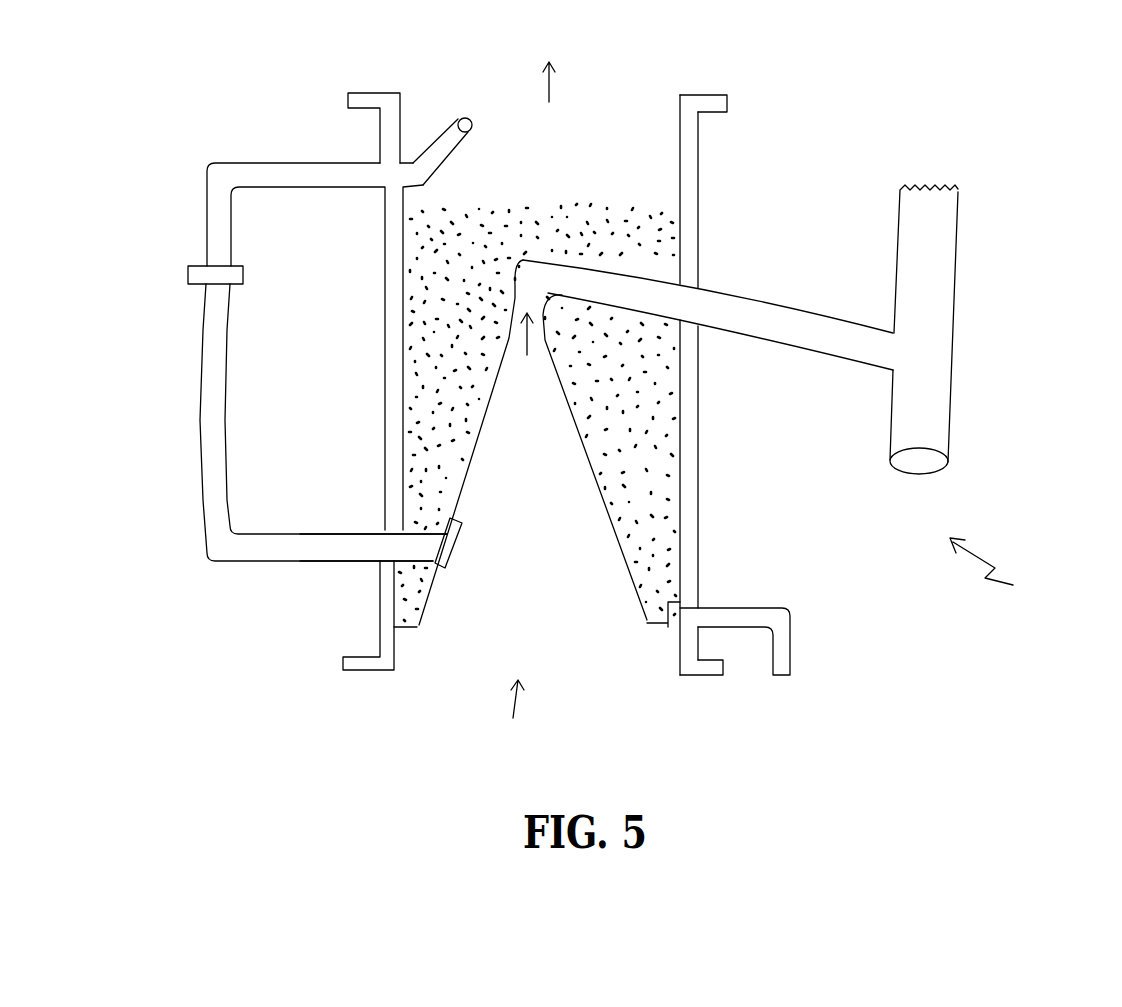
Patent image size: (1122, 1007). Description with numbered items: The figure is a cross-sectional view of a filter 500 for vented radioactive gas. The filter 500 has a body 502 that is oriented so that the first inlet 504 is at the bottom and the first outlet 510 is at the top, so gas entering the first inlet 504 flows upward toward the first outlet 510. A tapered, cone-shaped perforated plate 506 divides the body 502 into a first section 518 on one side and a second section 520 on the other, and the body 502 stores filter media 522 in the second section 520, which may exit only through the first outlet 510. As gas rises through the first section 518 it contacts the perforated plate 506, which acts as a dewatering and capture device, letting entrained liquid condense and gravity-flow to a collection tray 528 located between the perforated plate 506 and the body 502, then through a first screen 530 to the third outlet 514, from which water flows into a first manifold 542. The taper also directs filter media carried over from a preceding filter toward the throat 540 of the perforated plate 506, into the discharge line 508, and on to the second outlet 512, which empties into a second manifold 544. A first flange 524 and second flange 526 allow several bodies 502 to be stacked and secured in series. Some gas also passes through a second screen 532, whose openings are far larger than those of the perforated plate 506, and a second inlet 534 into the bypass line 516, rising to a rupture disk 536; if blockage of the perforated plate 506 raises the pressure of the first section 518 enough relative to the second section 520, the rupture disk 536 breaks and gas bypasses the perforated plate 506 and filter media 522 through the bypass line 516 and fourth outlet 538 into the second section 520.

The filter 500 is at (1018, 567).
The body 502 is at (700, 155).
The first inlet 504 is at (520, 721).
The perforated plate 506 is at (610, 560).
The discharge line 508 is at (655, 300).
The first outlet 510 is at (552, 65).
The second outlet 512 is at (693, 307).
The third outlet 514 is at (690, 618).
The bypass line 516 is at (218, 398).
The first section 518 is at (553, 485).
The second section 520 is at (650, 165).
The filter media 522 is at (653, 498).
The first flange 524 is at (357, 673).
The second flange 526 is at (370, 92).
The collection tray 528 is at (417, 627).
The first screen 530 is at (670, 627).
The second screen 532 is at (452, 550).
The second inlet 534 is at (437, 543).
The rupture disk 536 is at (246, 275).
The fourth outlet 538 is at (466, 117).
The throat 540 is at (533, 349).
The first manifold 542 is at (782, 648).
The second manifold 544 is at (930, 427).